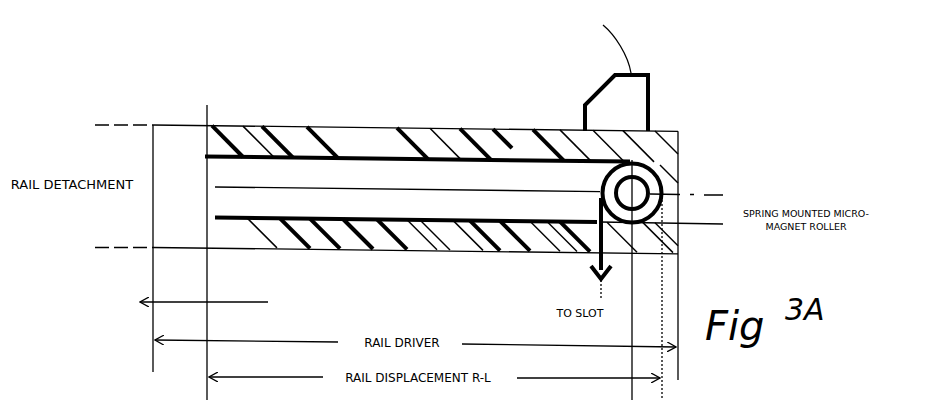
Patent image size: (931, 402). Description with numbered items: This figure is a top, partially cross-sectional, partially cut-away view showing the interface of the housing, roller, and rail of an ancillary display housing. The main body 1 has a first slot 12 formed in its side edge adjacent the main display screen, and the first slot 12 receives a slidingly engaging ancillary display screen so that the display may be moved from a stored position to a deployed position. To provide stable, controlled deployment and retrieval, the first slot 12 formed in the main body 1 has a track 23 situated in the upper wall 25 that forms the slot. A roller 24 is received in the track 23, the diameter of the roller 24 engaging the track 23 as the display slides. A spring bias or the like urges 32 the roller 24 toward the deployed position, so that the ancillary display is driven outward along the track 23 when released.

The main body 1 is at (265, 125).
The first slot 12 is at (348, 127).
The track 23 is at (433, 190).
The roller 24 is at (643, 162).
The wall 25 is at (348, 127).
The urging 32 is at (228, 300).